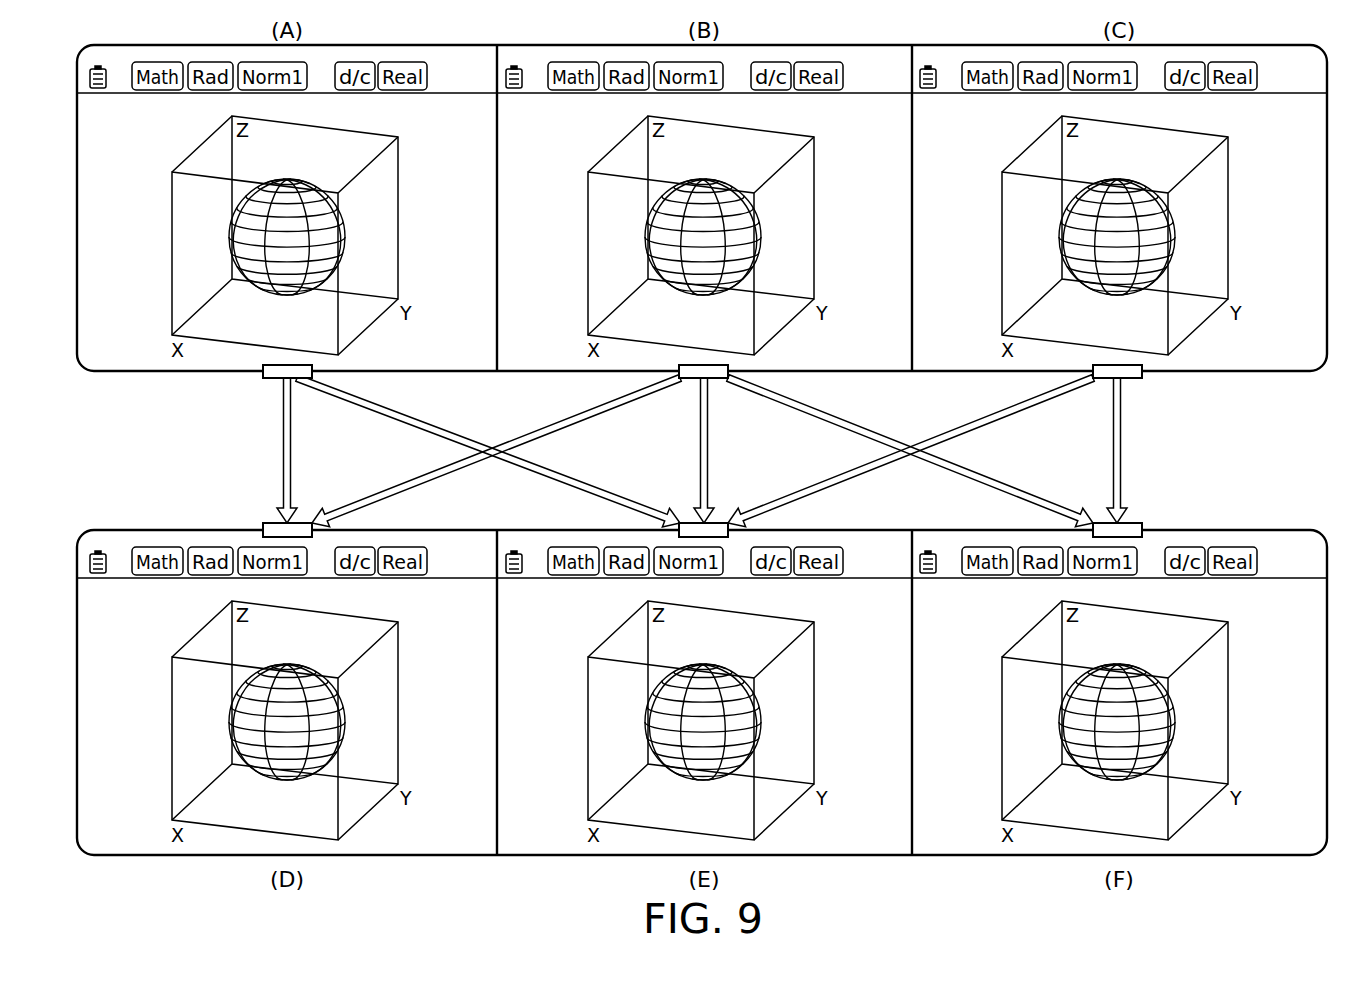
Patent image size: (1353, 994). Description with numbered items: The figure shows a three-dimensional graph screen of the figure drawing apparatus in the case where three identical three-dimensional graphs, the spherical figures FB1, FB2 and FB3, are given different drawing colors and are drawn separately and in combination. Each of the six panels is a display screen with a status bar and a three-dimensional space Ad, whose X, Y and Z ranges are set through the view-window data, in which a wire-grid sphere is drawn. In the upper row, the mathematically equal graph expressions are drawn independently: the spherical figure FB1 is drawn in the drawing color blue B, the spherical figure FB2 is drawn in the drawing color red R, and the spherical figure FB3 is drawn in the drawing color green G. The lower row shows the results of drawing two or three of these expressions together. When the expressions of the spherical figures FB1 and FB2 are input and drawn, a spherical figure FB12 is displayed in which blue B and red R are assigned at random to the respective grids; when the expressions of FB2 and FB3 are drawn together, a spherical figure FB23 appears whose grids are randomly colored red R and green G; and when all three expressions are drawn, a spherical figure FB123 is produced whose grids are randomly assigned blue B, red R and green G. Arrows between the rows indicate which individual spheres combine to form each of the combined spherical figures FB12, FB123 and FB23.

The 3D space Ad is at (368, 138).
The blue drawing color B is at (327, 203).
The red drawing color R is at (646, 237).
The green drawing color G is at (1060, 237).
The spherical figure FB1 is at (343, 218).
The spherical figure FB2 is at (759, 218).
The spherical figure FB3 is at (1173, 218).
The spherical figure FB12 is at (342, 688).
The spherical figure FB123 is at (760, 688).
The spherical figure FB23 is at (1173, 688).